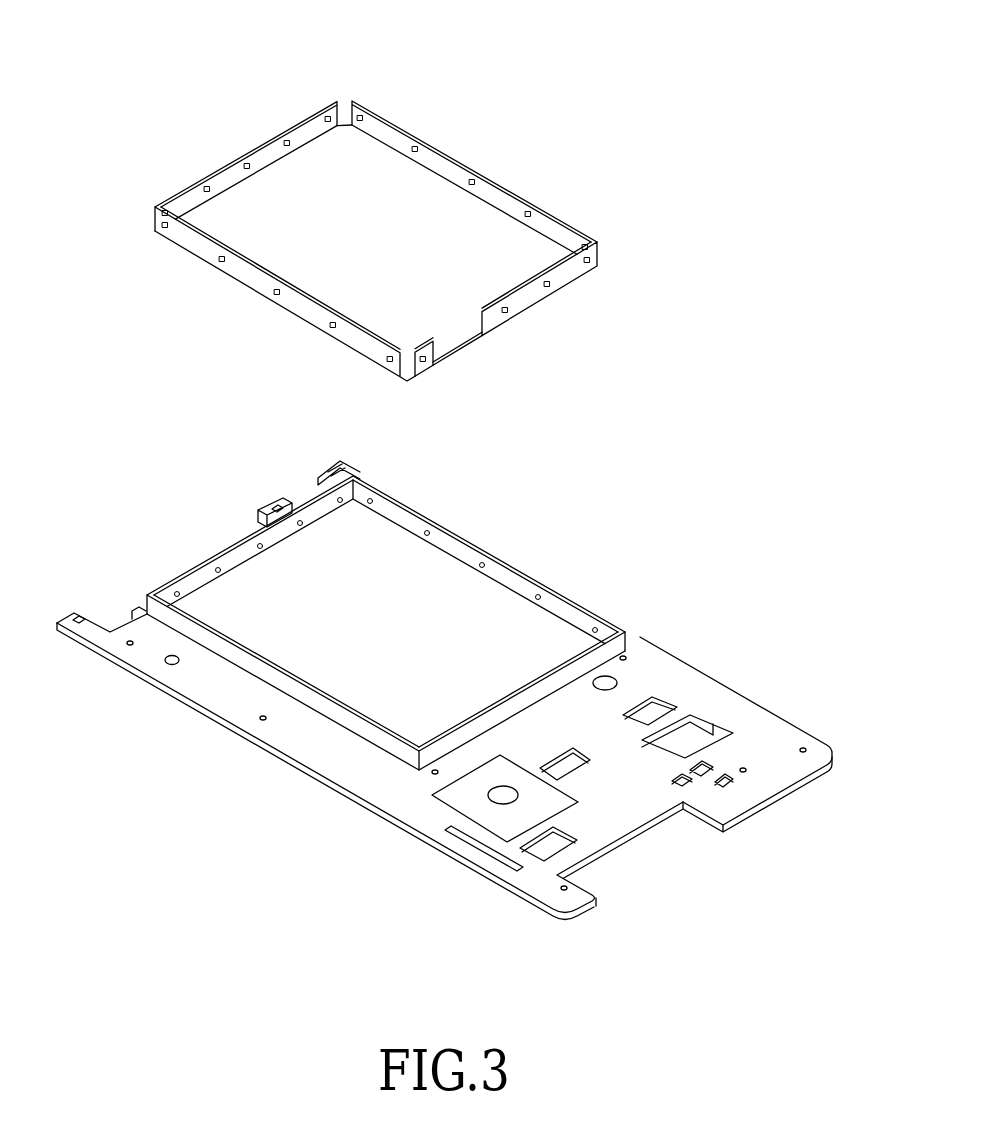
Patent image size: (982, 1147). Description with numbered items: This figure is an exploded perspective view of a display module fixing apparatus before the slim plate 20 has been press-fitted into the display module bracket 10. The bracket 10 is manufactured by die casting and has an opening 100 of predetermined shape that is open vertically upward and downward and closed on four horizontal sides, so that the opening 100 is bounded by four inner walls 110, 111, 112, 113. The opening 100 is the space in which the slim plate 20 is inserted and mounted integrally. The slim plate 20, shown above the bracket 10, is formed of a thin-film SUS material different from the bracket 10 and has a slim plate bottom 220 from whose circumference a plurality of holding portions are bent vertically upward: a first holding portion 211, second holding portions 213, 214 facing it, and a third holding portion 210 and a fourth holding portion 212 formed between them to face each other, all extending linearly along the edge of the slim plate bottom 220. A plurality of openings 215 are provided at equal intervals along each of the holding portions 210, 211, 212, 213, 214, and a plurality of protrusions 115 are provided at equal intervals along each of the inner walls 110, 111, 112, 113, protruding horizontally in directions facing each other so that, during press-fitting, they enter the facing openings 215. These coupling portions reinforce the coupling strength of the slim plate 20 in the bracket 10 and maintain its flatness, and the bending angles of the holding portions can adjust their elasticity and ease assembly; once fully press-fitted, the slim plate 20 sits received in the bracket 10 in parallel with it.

The display module bracket 10 is at (461, 658).
The slim plate 20 is at (399, 210).
The opening 100 is at (385, 634).
The inner wall 110 is at (467, 553).
The inner wall 111 is at (243, 552).
The inner wall 112 is at (357, 683).
The inner wall 113 is at (548, 660).
The protrusions 115 is at (217, 568).
The third holding portion 210 is at (445, 150).
The first holding portion 211 is at (218, 168).
The fourth holding portion 212 is at (205, 242).
The second holding portion 213 is at (563, 280).
The second holding portion 214 is at (429, 335).
The openings 215 is at (277, 126).
The slim plate bottom 220 is at (380, 163).